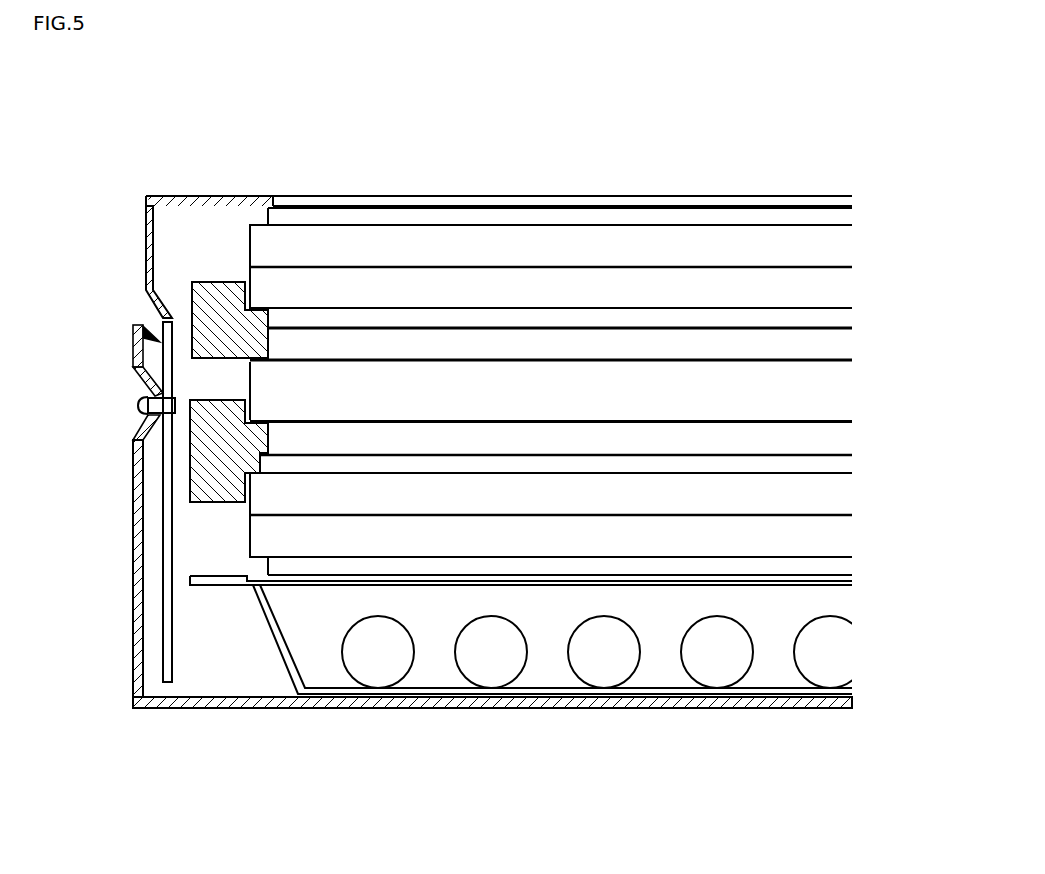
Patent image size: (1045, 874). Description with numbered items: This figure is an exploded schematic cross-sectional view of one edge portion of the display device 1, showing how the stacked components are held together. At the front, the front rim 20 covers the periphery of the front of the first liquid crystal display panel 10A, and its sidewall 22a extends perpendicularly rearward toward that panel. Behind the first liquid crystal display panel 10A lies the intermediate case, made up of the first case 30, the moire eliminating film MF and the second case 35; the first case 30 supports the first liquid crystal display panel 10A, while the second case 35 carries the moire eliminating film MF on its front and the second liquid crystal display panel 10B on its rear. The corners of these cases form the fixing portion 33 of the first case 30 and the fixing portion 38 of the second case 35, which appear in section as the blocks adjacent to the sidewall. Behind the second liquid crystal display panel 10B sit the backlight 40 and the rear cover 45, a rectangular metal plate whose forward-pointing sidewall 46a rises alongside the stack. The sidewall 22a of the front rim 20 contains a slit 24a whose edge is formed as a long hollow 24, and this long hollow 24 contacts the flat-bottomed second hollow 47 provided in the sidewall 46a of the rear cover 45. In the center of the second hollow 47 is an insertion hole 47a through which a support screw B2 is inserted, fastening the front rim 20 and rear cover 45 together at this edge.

The display device 1 is at (431, 83).
The front rim 20 is at (643, 197).
The sidewall 22a is at (146, 243).
The long hollow 24 is at (137, 327).
The slit 24a is at (168, 568).
The fixing portion 33 is at (193, 288).
The fixing portion 38 is at (205, 462).
The second hollow 47 is at (142, 395).
The insertion hole 47a is at (148, 420).
The support screw B2 is at (138, 405).
The sidewall 46a is at (130, 530).
The rear cover 45 is at (812, 708).
The first liquid crystal display panel 10A is at (832, 248).
The first case 30 is at (834, 338).
The moire eliminating film MF is at (832, 386).
The second case 35 is at (834, 431).
The second liquid crystal display panel 10B is at (832, 493).
The backlight 40 is at (832, 598).